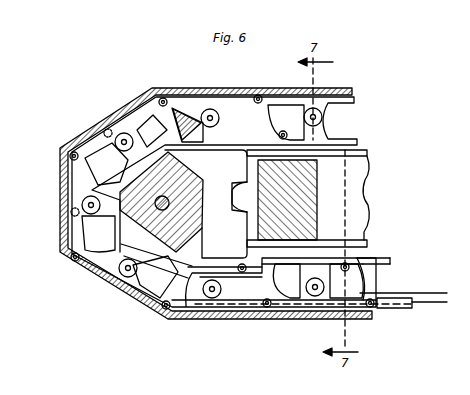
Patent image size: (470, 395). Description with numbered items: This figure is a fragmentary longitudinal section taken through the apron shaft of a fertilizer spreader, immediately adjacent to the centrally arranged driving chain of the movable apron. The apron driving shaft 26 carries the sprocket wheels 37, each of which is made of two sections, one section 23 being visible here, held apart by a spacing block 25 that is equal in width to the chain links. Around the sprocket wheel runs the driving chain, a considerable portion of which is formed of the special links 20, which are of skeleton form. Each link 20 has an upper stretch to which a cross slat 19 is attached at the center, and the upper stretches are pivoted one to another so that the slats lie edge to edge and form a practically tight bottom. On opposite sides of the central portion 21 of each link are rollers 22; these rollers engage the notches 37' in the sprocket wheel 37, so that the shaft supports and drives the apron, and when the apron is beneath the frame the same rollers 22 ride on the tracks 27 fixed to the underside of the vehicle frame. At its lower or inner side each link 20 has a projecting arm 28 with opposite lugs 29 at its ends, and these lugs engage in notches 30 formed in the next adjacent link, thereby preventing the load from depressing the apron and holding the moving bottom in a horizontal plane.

The cross slat 19 is at (150, 96).
The special link 20 is at (159, 121).
The central portion 21 is at (313, 272).
The roller 22 is at (82, 203).
The sprocket wheel section 23 is at (182, 295).
The spacing block 25 is at (183, 172).
The apron driving shaft 26 is at (202, 197).
The track 27 is at (437, 291).
The projecting arm 28 is at (118, 160).
The lug 29 is at (240, 264).
The notch 30 is at (184, 138).
The sprocket wheel 37 is at (308, 203).
The notch 37' is at (227, 261).